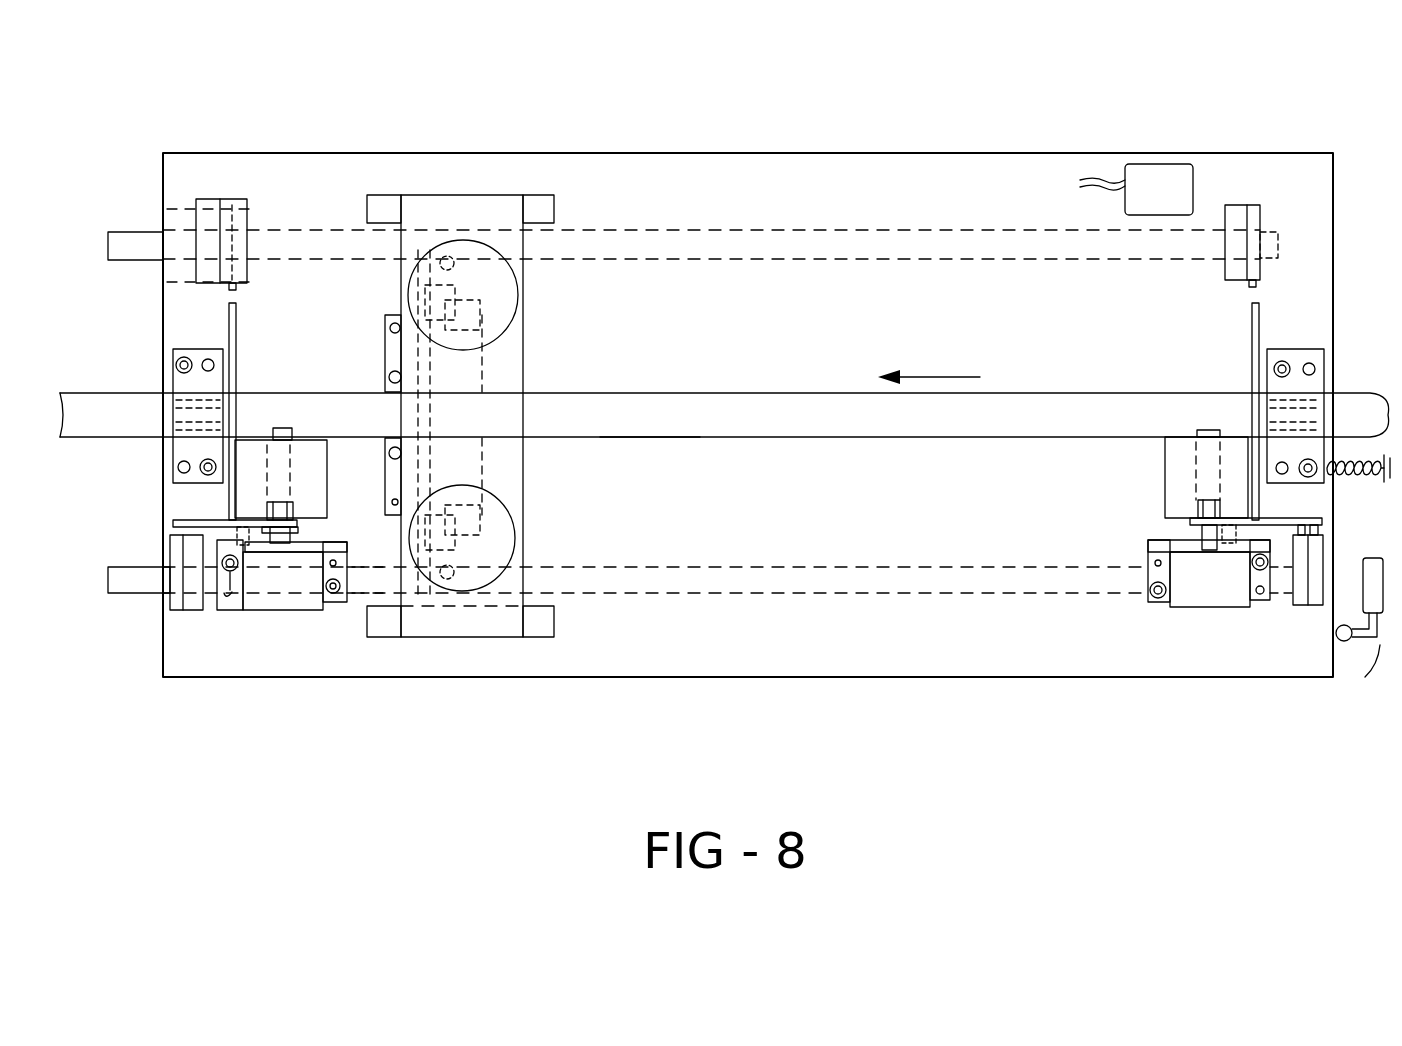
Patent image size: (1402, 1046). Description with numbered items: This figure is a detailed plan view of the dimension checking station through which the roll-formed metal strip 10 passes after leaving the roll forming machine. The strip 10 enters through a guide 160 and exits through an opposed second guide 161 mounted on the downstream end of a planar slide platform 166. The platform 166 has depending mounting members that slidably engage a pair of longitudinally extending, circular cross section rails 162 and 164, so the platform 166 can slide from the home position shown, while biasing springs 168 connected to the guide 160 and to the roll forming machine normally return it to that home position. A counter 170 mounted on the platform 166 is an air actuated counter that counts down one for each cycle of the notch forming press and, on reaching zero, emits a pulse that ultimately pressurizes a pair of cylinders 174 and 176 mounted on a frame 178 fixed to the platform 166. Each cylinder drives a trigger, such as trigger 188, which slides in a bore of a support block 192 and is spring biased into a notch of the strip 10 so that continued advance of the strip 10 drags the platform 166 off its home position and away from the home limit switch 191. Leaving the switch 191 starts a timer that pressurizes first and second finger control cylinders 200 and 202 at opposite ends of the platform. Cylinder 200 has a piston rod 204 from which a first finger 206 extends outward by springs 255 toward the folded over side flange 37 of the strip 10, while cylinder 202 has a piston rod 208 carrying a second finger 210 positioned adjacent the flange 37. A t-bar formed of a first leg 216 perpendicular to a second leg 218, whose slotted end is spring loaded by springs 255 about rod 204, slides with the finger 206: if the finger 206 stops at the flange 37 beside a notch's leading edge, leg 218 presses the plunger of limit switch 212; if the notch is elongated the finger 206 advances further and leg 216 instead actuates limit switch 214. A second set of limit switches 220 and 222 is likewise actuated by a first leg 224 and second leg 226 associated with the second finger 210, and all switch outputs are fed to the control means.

The metal strip 10 is at (660, 400).
The folded over side flange 37 is at (643, 433).
The guide 160 is at (1307, 352).
The second guide 161 is at (183, 385).
The rail 162 is at (673, 232).
The rail 164 is at (930, 585).
The slide platform 166 is at (815, 668).
The biasing spring 168 is at (1372, 475).
The counter 170 is at (1128, 166).
The cylinder 174 is at (462, 245).
The cylinder 176 is at (512, 545).
The frame 178 is at (482, 637).
The trigger 188 is at (400, 404).
The home limit switch 191 is at (1356, 642).
The support block 192 is at (386, 330).
The first finger control cylinder 200 is at (1200, 600).
The second finger control cylinder 202 is at (310, 607).
The piston rod 204 is at (1198, 530).
The first finger 206 is at (1200, 432).
The piston rod 208 is at (290, 541).
The second finger 210 is at (278, 440).
The first limit switch 212 is at (1302, 605).
The second limit switch 214 is at (1258, 205).
The first leg 216 is at (1252, 310).
The second leg 218 is at (1283, 560).
The limit switch 220 is at (195, 607).
The limit switch 222 is at (232, 200).
The first leg 224 is at (229, 310).
The second leg 226 is at (200, 521).
The springs 255 is at (250, 605).